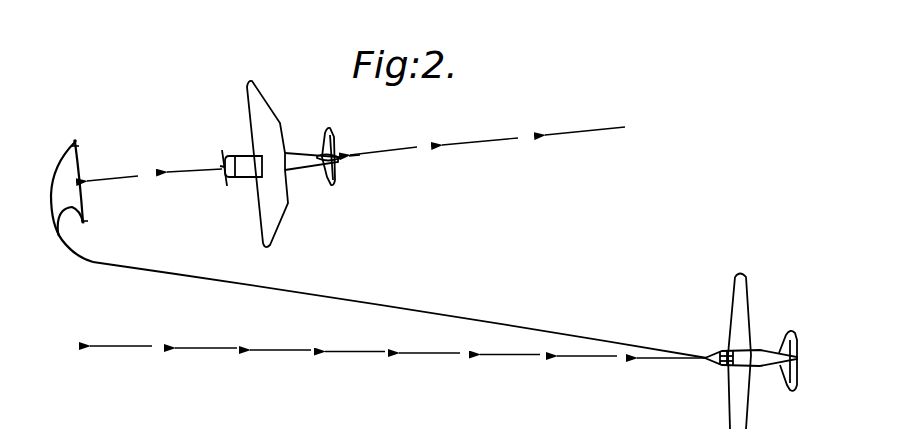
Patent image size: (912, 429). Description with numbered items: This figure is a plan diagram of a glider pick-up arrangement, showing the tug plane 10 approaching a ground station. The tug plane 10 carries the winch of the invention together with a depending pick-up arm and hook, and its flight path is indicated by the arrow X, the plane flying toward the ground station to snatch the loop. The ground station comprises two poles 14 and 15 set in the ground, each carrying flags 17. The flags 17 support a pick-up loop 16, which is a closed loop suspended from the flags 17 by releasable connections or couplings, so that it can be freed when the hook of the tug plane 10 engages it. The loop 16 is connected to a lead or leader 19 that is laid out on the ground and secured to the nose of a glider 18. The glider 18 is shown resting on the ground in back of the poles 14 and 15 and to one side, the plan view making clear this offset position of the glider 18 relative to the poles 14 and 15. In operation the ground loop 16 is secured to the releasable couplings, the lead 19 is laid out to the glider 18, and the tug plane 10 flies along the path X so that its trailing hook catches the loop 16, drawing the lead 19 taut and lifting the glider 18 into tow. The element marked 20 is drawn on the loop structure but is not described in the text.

The tug plane 10 is at (262, 131).
The pole 14 is at (75, 140).
The pole 15 is at (86, 225).
The pick-up loop 16 is at (53, 179).
The flags 17 is at (77, 146).
The glider 18 is at (735, 345).
The lead or leader 19 is at (313, 296).
The target spar 20 is at (77, 171).
The arrow indicating path of tow plane X is at (481, 142).